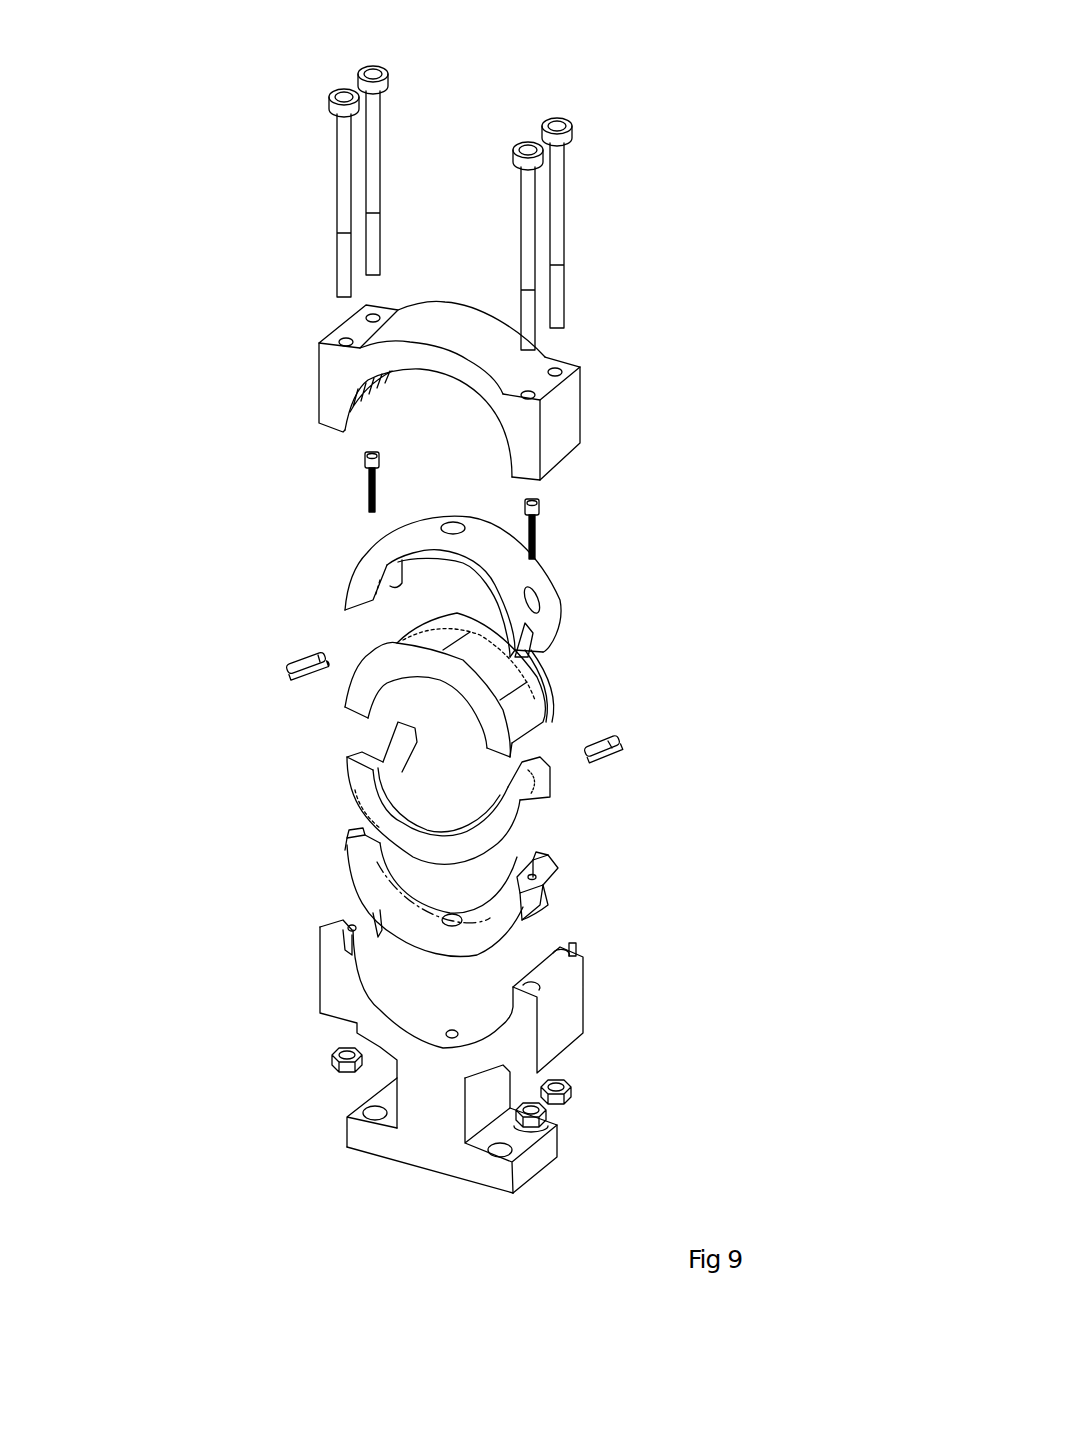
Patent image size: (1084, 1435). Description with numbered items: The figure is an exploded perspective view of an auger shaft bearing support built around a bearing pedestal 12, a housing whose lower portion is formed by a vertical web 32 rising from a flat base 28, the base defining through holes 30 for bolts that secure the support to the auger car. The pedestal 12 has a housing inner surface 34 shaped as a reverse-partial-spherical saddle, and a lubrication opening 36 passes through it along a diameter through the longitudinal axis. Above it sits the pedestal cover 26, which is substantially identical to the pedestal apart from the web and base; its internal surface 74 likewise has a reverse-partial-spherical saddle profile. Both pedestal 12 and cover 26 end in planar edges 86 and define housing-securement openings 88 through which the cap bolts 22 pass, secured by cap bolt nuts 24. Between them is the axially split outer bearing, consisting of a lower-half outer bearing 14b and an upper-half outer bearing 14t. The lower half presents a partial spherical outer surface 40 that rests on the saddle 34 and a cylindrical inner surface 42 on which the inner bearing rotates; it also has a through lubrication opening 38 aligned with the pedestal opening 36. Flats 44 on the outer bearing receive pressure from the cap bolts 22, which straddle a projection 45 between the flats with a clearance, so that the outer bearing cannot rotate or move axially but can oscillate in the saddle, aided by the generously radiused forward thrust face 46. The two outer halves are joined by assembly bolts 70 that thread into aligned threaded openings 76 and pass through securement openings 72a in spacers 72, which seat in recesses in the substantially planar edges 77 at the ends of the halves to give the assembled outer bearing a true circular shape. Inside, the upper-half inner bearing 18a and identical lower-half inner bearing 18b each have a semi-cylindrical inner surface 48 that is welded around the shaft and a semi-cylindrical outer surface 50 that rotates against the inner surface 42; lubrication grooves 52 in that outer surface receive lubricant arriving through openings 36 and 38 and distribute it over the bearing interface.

The bearing pedestal 12 is at (620, 1072).
The upper-half outer bearing 14t is at (585, 582).
The lower-half outer bearing 14b is at (590, 900).
The upper-half inner bearing 18a is at (585, 685).
The lower-half inner bearing 18b is at (588, 800).
The cap bolts 22 is at (566, 141).
The cap bolt nuts 24 is at (335, 1065).
The pedestal cover 26 is at (623, 397).
The flat base 28 is at (514, 1160).
The through holes 30 is at (355, 1110).
The vertical web 32 is at (433, 1120).
The housing inner surface 34 is at (367, 973).
The lubrication opening 36 is at (452, 1038).
The through lubrication opening 38 is at (453, 522).
The partial spherical outer surface 40 is at (400, 538).
The cylindrical inner surface 42 is at (395, 872).
The flats 44 is at (558, 870).
The projection 45 is at (537, 633).
The forward thrust face 46 is at (445, 947).
The semi-cylindrical inner surface 48 is at (393, 773).
The semi-cylindrical outer surface 50 is at (535, 718).
The lubrication grooves 52 is at (530, 678).
The assembly bolts 70 is at (364, 453).
The spacers 72 is at (288, 677).
The securement openings 72a is at (300, 660).
The internal surface 74 is at (363, 405).
The threaded openings 76 is at (535, 580).
The substantially planar edges 77 is at (350, 840).
The planar edges 86 is at (552, 970).
The housing-securement openings 88 is at (360, 315).